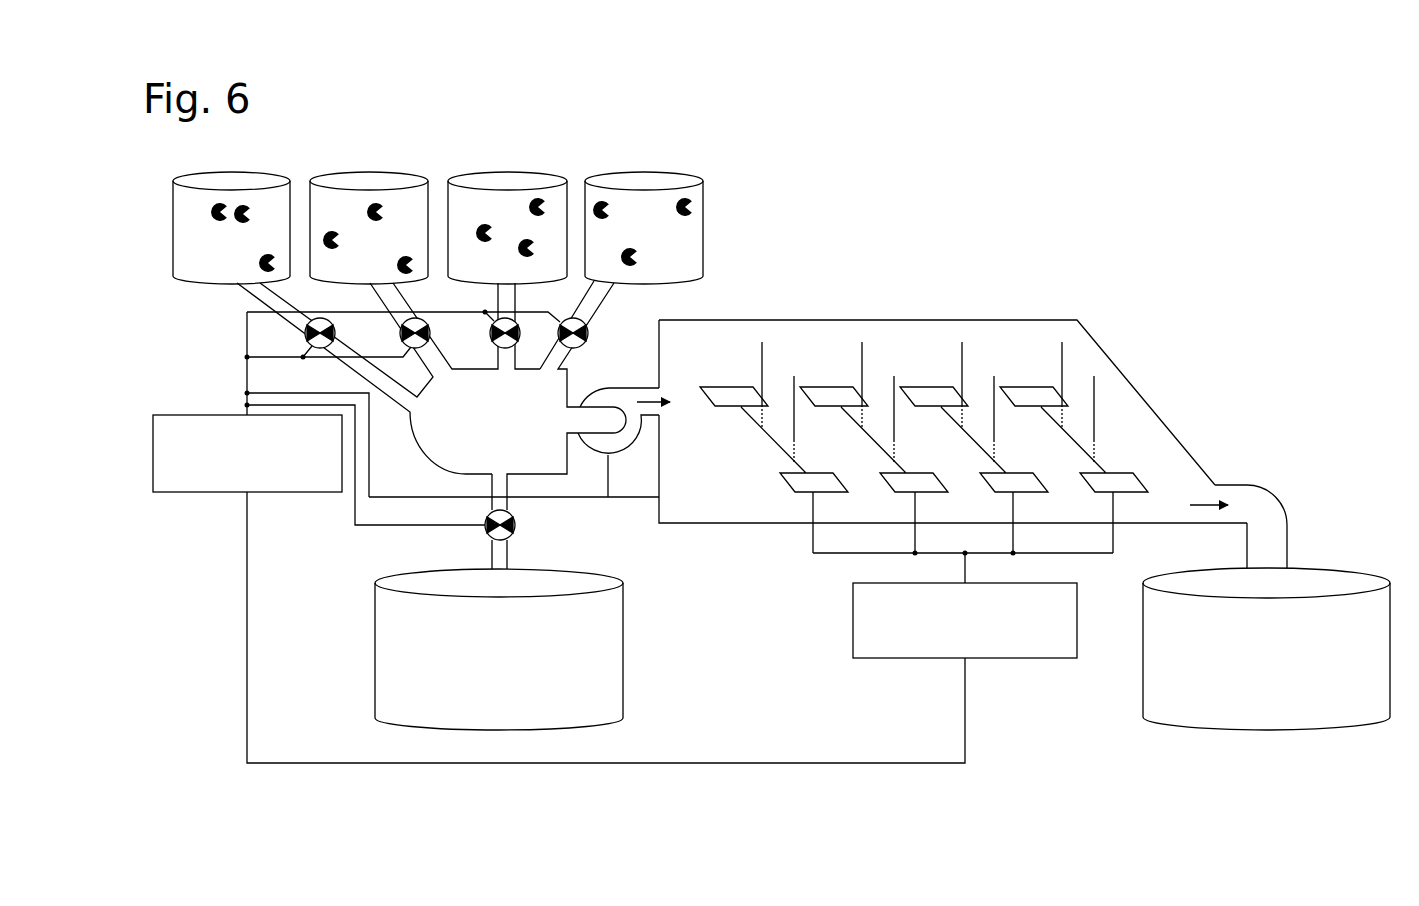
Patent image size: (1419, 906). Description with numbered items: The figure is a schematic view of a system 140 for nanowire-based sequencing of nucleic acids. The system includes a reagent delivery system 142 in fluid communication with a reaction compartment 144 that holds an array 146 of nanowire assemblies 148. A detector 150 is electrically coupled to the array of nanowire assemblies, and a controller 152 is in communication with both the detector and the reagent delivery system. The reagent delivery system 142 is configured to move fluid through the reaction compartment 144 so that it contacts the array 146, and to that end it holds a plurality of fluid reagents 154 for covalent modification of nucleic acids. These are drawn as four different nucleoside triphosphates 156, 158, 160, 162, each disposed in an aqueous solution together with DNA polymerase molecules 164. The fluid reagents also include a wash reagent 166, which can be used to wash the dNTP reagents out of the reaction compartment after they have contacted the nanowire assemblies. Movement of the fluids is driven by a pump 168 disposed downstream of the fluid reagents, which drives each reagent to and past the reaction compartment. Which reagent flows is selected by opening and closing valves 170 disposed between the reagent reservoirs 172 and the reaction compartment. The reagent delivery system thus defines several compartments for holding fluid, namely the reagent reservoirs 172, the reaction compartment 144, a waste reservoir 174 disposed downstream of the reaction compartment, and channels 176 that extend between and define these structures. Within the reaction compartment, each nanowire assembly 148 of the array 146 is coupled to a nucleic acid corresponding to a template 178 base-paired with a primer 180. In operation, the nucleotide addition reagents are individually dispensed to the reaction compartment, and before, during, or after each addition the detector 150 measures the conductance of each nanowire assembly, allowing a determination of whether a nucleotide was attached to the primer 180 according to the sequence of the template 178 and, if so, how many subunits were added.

The system for nanowire based sequencing 140 is at (1201, 140).
The reagent delivery system 142 is at (216, 742).
The reaction compartment 144 is at (903, 320).
The array of nanowire assemblies 146 is at (986, 351).
The nanowire assembly 148 is at (1103, 448).
The detector 150 is at (1030, 585).
The controller 152 is at (204, 415).
The fluid reagents 154 is at (584, 134).
The nucleoside triphosphate 156 is at (251, 192).
The nucleoside triphosphate 158 is at (353, 204).
The nucleoside triphosphate 160 is at (489, 207).
The nucleoside triphosphate 162 is at (652, 194).
The DNA polymerase molecules 164 is at (222, 207).
The wash reagent 166 is at (608, 667).
The pump 168 is at (616, 380).
The valves 170 is at (400, 333).
The reagent reservoirs 172 is at (706, 243).
The waste reservoir 174 is at (1335, 568).
The channels 176 is at (528, 498).
The template 178 is at (762, 370).
The primer 180 is at (767, 417).